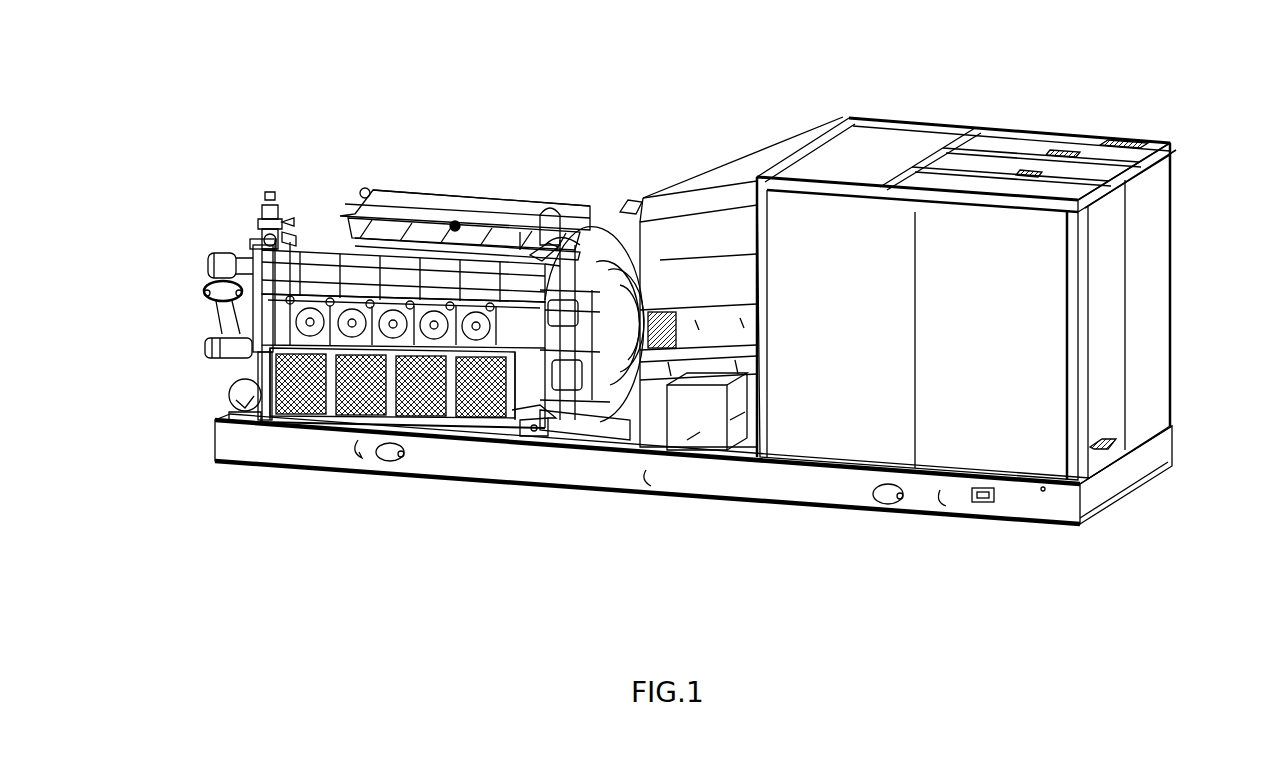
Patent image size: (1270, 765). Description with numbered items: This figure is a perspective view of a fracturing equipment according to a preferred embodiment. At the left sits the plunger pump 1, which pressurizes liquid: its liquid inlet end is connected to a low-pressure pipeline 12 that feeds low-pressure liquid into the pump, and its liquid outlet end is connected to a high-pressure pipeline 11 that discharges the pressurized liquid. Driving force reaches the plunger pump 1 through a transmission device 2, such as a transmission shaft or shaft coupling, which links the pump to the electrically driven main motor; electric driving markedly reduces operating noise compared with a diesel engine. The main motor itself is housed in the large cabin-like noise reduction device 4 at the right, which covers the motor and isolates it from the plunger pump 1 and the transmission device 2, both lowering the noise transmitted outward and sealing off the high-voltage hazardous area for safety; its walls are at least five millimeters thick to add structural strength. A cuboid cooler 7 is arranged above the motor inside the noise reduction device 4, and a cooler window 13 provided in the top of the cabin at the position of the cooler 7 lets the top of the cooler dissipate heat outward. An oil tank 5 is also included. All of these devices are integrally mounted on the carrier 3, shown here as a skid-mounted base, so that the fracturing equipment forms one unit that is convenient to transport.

The plunger pump 1 is at (423, 210).
The transmission device 2 is at (712, 335).
The carrier 3 is at (820, 487).
The noise reduction device 4 is at (1012, 263).
The oil tank 5 is at (667, 450).
The cooler 7 is at (1107, 145).
The high-pressure pipeline 11 is at (280, 215).
The low-pressure pipeline 12 is at (532, 440).
The cooler window 13 is at (998, 135).